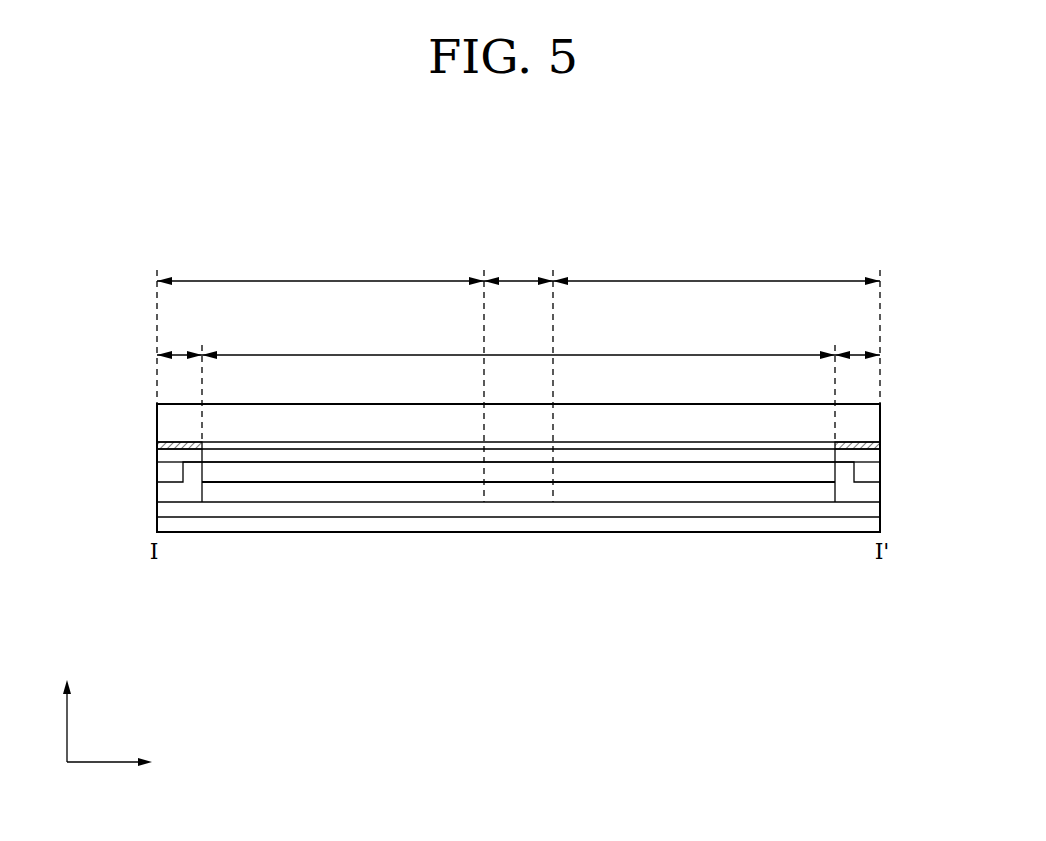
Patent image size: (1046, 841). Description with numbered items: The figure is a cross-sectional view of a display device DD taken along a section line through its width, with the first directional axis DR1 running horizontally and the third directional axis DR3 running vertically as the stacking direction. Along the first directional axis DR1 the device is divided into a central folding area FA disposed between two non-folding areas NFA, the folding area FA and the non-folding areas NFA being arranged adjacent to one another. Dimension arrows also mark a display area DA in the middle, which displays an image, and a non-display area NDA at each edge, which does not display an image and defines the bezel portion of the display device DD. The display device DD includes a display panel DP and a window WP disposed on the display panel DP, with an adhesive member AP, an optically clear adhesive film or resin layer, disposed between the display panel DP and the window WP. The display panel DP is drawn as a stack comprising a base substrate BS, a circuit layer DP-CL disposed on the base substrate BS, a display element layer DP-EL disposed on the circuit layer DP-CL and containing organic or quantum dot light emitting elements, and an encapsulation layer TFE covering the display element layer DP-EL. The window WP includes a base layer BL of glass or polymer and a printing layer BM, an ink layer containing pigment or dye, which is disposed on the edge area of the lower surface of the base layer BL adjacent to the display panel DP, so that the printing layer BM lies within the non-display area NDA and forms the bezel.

The display device DD is at (858, 214).
The window WP is at (88, 413).
The base layer BL is at (157, 423).
The printing layer BM is at (157, 447).
The adhesive member AP is at (872, 465).
The display panel DP is at (357, 612).
The base substrate BS is at (375, 523).
The circuit layer DP-CL is at (461, 508).
The display element layer DP-EL is at (570, 496).
The encapsulation layer TFE is at (657, 470).
The non-folding areas NFA is at (518, 269).
The folding area FA is at (518, 269).
The non-display area NDA is at (518, 341).
The display area DA is at (518, 341).
The first directional axis DR1 is at (132, 763).
The third directional axis DR3 is at (68, 709).